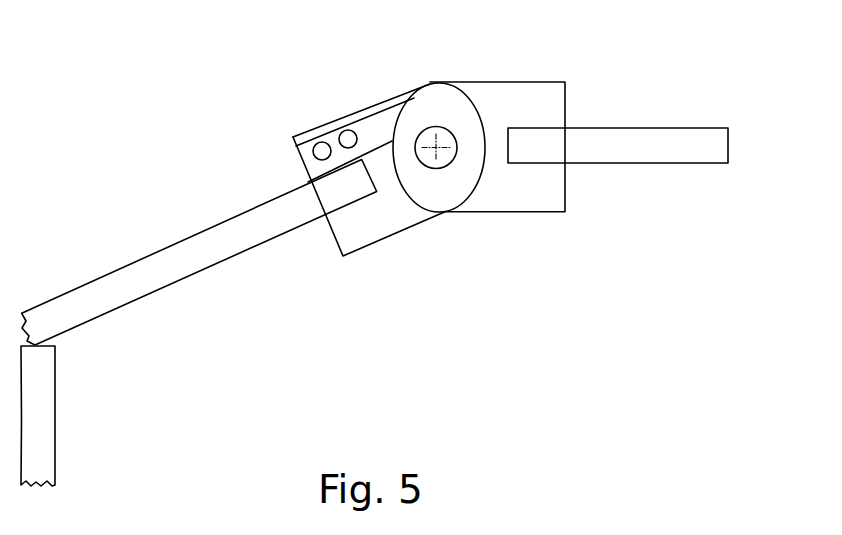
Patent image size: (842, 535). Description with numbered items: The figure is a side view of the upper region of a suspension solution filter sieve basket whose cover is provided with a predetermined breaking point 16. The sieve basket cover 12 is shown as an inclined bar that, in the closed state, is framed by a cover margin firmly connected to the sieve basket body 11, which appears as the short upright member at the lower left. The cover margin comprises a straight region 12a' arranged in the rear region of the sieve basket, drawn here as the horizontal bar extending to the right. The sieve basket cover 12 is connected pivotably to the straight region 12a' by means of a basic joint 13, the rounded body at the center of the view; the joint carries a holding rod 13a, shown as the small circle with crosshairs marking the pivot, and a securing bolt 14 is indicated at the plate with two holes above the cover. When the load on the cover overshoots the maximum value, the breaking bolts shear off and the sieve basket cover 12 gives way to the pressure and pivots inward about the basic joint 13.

The sieve basket body 11 is at (42, 412).
The sieve basket cover 12 is at (133, 287).
The straight region of cover margin 12a' is at (664, 160).
The basic joint 13 is at (422, 167).
The holding rod 13a is at (436, 127).
The securing bolt 14 is at (347, 136).
The predetermined breaking point 16 is at (266, 64).